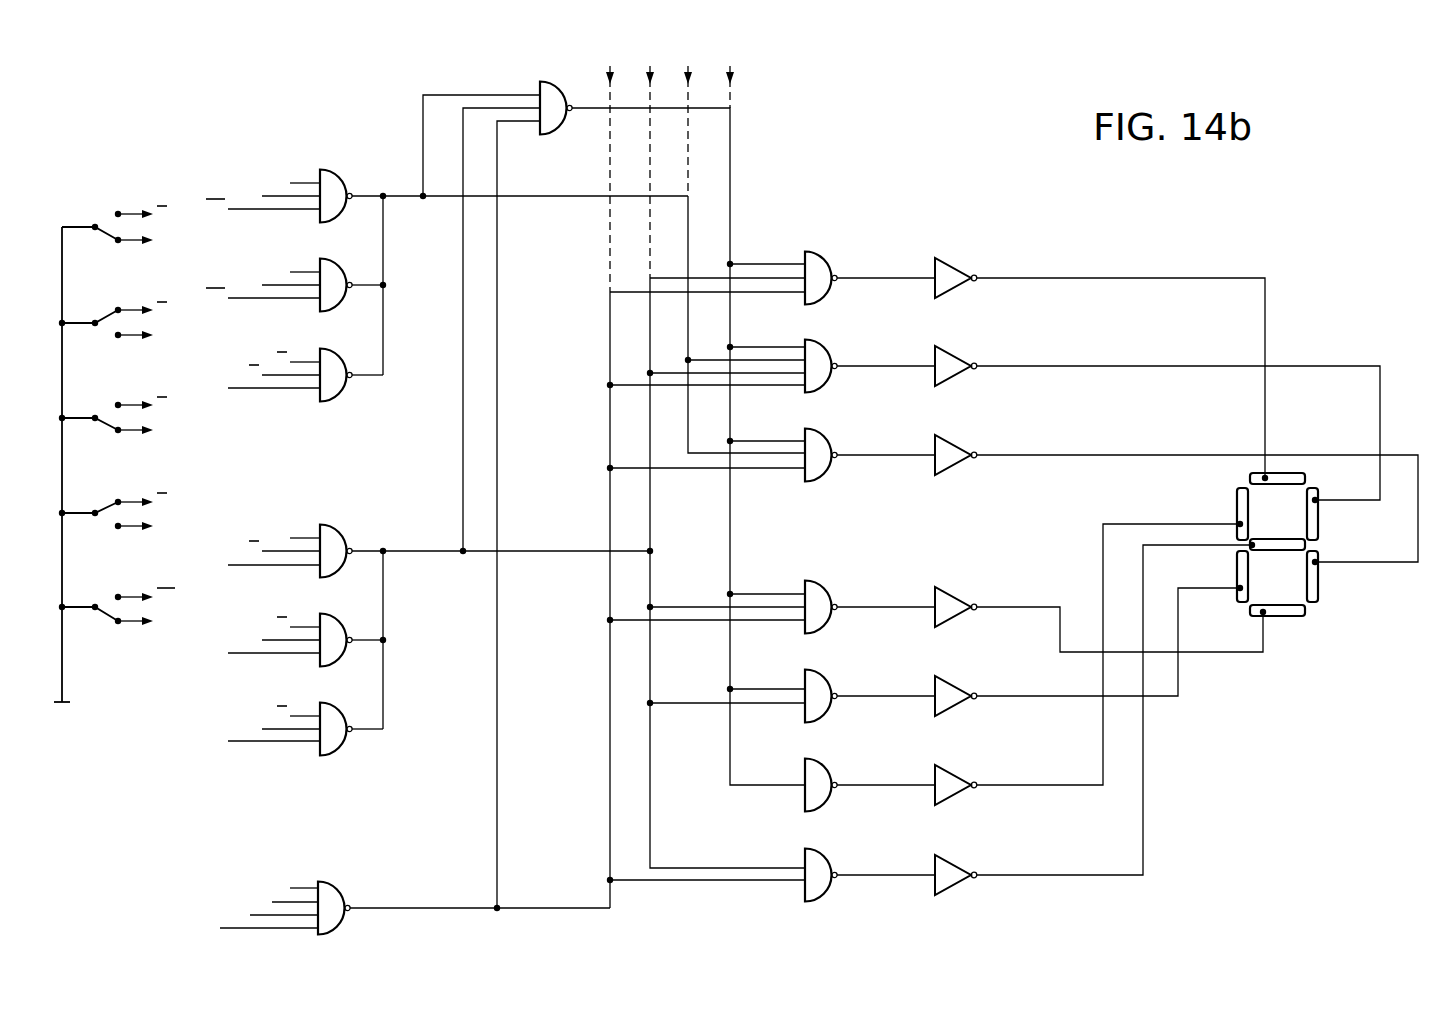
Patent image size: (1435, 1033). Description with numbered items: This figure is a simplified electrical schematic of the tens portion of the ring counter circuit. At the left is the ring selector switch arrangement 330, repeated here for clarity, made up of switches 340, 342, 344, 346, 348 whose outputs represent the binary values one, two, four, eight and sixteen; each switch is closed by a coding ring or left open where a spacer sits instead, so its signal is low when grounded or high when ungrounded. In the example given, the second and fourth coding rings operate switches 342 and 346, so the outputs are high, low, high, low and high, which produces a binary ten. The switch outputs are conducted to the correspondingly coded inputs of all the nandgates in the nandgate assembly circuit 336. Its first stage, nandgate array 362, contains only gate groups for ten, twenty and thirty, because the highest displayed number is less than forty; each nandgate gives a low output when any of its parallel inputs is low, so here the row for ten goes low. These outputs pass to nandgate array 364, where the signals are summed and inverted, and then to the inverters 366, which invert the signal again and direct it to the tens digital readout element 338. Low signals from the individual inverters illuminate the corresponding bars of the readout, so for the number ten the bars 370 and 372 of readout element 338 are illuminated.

The ring selector switch arrangement 330 is at (100, 672).
The switch 340 is at (100, 226).
The switch 342 is at (100, 322).
The switch 344 is at (100, 417).
The switch 346 is at (100, 512).
The switch 348 is at (100, 606).
The nandgate assembly circuit 336 is at (456, 780).
The nandgate array 362 is at (570, 70).
The nandgate array 364 is at (752, 50).
The inverters 366 is at (992, 238).
The tens digital readout element 338 is at (1313, 618).
The bar 370 is at (1300, 536).
The bar 372 is at (1300, 602).